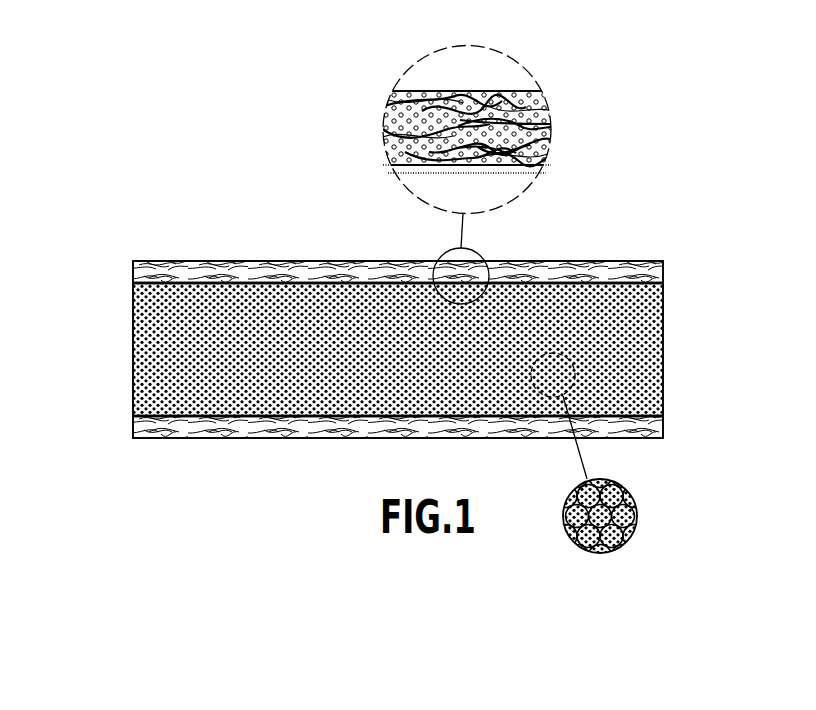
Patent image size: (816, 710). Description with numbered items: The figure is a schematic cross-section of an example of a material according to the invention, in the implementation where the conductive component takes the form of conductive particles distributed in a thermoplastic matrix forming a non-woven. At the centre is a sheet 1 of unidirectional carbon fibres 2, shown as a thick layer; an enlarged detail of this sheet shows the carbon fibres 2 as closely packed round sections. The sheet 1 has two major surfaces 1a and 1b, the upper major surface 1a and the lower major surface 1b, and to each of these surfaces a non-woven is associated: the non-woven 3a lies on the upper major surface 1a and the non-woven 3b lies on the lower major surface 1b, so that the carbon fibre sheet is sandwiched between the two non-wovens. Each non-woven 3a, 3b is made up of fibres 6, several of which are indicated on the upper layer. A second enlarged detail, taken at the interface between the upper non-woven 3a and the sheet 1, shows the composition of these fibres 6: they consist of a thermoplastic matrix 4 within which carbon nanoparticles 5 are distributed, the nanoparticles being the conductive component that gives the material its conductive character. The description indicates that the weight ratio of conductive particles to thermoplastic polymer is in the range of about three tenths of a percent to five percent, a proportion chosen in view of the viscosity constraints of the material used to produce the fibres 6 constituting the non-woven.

The sheet 1 is at (118, 349).
The major surface 1a is at (620, 277).
The major surface 1b is at (620, 407).
The unidirectional carbon fibres 2 is at (643, 345).
The non-woven 3a is at (205, 249).
The non-woven 3b is at (195, 437).
The thermoplastic matrix 4 is at (483, 158).
The carbon nanoparticles 5 is at (448, 88).
The fibres 6 is at (362, 256).